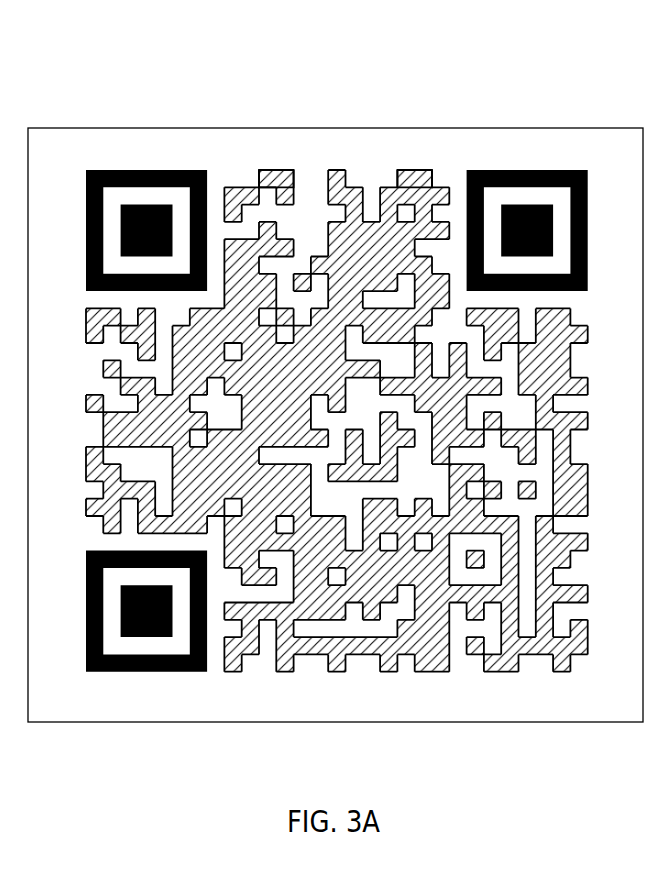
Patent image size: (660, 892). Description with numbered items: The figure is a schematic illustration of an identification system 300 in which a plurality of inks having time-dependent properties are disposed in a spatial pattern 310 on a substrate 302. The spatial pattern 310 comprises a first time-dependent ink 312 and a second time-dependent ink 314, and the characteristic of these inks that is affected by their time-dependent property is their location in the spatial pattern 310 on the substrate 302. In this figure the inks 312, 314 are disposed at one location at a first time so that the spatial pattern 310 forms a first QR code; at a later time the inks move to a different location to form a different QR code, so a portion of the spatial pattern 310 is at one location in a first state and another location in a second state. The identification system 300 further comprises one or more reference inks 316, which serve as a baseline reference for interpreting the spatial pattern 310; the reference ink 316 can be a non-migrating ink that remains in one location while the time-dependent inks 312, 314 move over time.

The identification system 300 is at (391, 100).
The substrate 302 is at (145, 690).
The spatial pattern 310 is at (413, 686).
The first time-dependent ink 312 is at (282, 170).
The second time-dependent ink 314 is at (422, 170).
The reference ink 316 is at (157, 170).